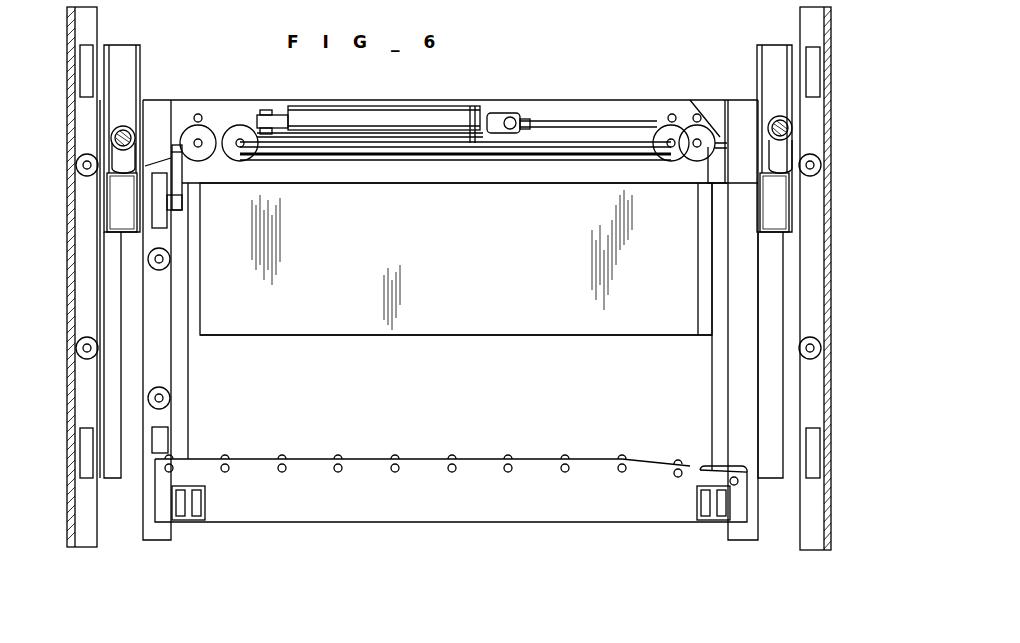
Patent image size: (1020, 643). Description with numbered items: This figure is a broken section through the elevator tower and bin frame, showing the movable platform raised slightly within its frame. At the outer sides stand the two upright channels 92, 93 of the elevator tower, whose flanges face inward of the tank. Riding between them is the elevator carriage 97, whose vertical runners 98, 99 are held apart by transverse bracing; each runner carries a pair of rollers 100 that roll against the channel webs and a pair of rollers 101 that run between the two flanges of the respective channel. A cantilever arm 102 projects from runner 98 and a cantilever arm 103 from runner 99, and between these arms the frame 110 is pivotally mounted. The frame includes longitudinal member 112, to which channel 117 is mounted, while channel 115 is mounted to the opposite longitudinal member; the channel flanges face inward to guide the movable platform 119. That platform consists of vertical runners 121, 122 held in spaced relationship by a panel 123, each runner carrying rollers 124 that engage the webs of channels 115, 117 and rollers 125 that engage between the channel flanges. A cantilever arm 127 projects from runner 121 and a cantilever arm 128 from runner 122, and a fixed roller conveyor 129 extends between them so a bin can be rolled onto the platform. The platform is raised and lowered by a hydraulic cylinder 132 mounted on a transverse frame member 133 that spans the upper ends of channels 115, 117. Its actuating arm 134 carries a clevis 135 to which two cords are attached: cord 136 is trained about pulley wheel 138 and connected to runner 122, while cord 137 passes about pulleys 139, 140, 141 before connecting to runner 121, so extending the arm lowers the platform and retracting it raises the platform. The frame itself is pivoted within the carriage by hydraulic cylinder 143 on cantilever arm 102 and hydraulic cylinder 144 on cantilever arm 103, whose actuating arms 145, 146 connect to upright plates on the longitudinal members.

The upright channel 92 is at (90, 17).
The upright channel 93 is at (810, 33).
The elevator carriage 97 is at (152, 94).
The vertical runner 98 is at (100, 284).
The vertical runner 99 is at (800, 270).
The roller 100 is at (77, 162).
The roller 101 is at (88, 58).
The cantilever arm 102 is at (110, 236).
The cantilever arm 103 is at (790, 236).
The frame 110 is at (314, 530).
The longitudinal member 112 is at (714, 242).
The channel 115 is at (165, 300).
The channel 117 is at (728, 270).
The movable platform 119 is at (318, 338).
The vertical runner 121 is at (182, 366).
The vertical runner 122 is at (712, 362).
The panel 123 is at (483, 249).
The roller 124 is at (162, 250).
The roller 125 is at (162, 222).
The cantilever arm 127 is at (194, 500).
The cantilever arm 128 is at (700, 500).
The fixed roller conveyor 129 is at (452, 458).
The hydraulic cylinder 132 is at (387, 118).
The transverse frame member 133 is at (598, 116).
The actuating arm 134 is at (492, 118).
The clevis 135 is at (512, 118).
The cord 136 is at (708, 172).
The cord 137 is at (180, 168).
The pulley wheel 138 is at (703, 130).
The pulley 139 is at (666, 128).
The pulley 140 is at (239, 128).
The pulley 141 is at (204, 132).
The hydraulic cylinder 143 is at (112, 130).
The hydraulic cylinder 144 is at (790, 120).
The actuating arm 145 is at (113, 140).
The actuating arm 146 is at (792, 136).